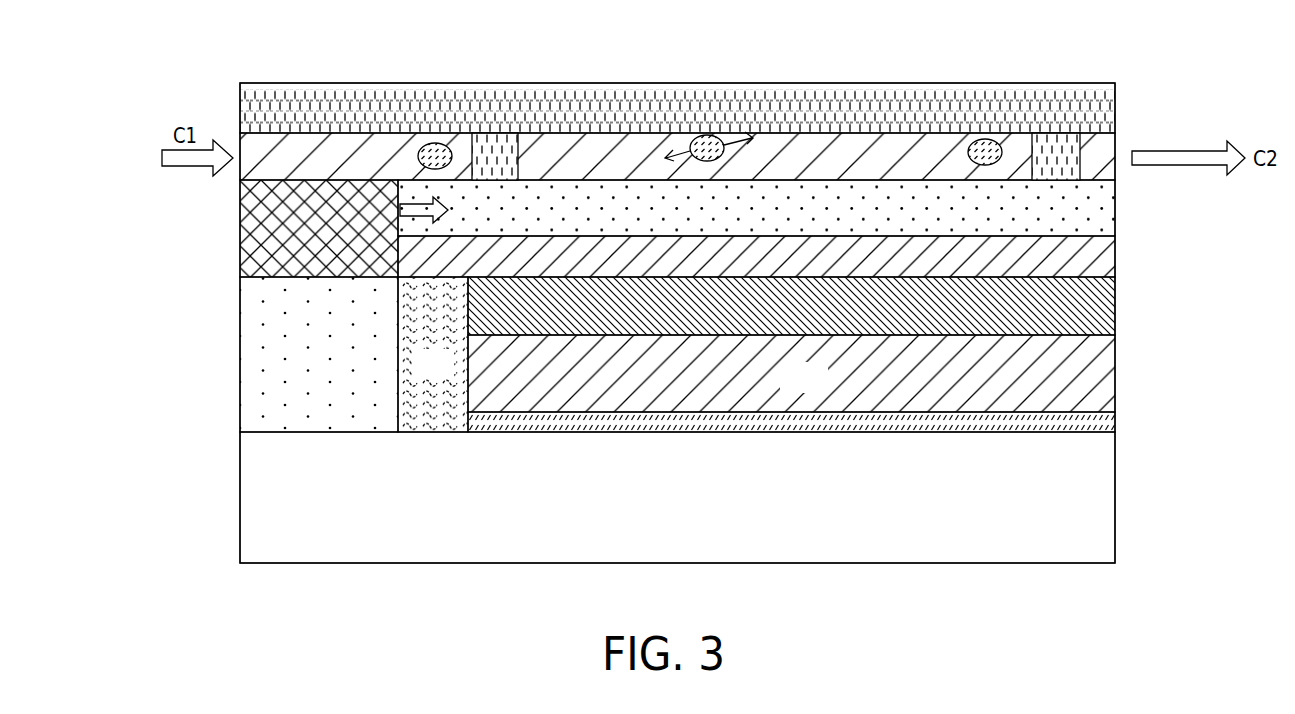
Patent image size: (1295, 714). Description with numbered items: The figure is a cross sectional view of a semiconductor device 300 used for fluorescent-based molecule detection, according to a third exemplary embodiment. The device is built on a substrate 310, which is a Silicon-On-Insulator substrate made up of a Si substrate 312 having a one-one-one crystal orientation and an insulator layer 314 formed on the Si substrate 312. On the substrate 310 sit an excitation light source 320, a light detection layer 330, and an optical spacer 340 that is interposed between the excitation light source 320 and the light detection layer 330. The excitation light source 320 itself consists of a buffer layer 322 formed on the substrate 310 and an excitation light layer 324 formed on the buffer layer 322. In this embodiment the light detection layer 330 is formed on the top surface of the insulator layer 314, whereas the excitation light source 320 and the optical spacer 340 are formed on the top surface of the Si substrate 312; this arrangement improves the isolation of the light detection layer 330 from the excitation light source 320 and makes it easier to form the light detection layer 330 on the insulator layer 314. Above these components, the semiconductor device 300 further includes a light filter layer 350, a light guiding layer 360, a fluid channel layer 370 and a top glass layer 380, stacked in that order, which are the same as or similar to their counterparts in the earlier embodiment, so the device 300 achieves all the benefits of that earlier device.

The semiconductor device 300 is at (649, 288).
The substrate 310 is at (742, 487).
The Si substrate 312 is at (1100, 470).
The insulator layer 314 is at (1103, 418).
The excitation light source 320 is at (268, 306).
The buffer layer 322 is at (275, 343).
The excitation light layer 324 is at (296, 228).
The light detection layer 330 is at (821, 390).
The optical spacer 340 is at (451, 375).
The light filter layer 350 is at (1115, 305).
The light guiding layer 360 is at (1128, 185).
The fluid channel layer 370 is at (1048, 153).
The top glass layer 380 is at (863, 115).